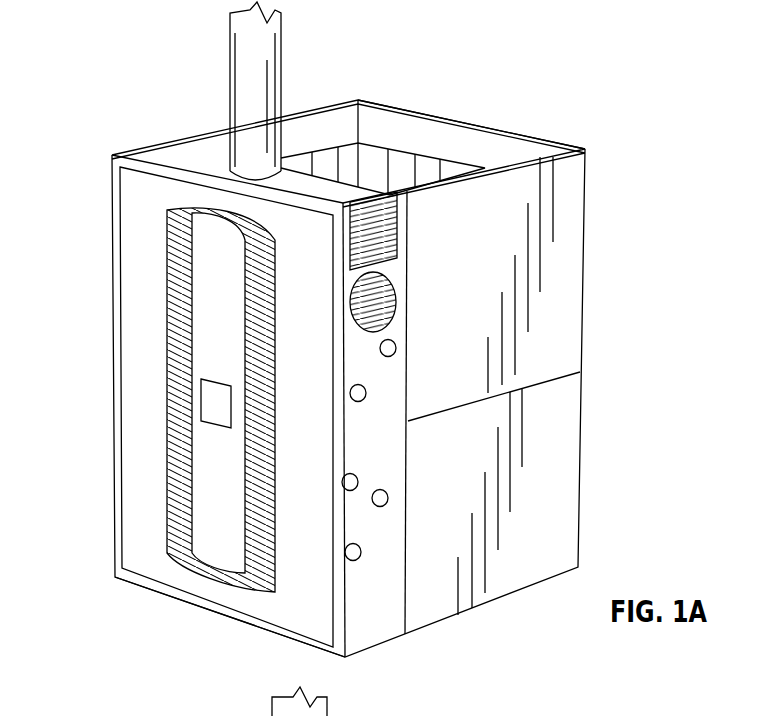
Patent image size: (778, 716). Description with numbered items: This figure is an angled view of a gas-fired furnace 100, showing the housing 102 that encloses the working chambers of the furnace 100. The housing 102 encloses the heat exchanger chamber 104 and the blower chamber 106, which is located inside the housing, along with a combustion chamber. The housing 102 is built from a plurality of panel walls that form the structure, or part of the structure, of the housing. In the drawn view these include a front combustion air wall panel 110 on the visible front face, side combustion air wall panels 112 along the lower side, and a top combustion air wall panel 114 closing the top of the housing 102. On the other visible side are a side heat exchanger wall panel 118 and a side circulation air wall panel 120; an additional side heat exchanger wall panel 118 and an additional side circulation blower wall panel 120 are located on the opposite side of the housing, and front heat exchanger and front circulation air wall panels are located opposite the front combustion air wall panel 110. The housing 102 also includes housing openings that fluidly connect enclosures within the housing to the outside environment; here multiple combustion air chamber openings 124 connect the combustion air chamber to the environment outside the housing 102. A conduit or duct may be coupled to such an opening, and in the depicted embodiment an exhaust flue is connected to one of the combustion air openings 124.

The furnace 100 is at (463, 68).
The housing 102 is at (158, 155).
The heat exchanger chamber 104 is at (510, 147).
The blower chamber 106 is at (560, 528).
The front combustion air wall panel 110 is at (128, 538).
The side combustion air wall panel 112 is at (372, 630).
The top combustion air wall panel 114 is at (302, 183).
The side heat exchanger wall panel 118 is at (528, 297).
The side circulation air wall panel 120 is at (542, 487).
The combustion air chamber opening 124 is at (215, 178).